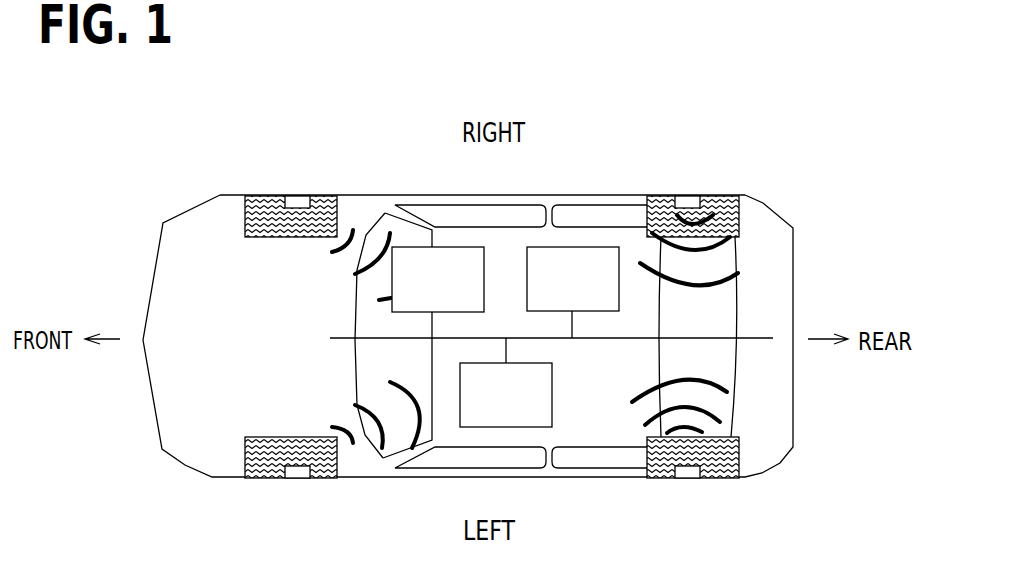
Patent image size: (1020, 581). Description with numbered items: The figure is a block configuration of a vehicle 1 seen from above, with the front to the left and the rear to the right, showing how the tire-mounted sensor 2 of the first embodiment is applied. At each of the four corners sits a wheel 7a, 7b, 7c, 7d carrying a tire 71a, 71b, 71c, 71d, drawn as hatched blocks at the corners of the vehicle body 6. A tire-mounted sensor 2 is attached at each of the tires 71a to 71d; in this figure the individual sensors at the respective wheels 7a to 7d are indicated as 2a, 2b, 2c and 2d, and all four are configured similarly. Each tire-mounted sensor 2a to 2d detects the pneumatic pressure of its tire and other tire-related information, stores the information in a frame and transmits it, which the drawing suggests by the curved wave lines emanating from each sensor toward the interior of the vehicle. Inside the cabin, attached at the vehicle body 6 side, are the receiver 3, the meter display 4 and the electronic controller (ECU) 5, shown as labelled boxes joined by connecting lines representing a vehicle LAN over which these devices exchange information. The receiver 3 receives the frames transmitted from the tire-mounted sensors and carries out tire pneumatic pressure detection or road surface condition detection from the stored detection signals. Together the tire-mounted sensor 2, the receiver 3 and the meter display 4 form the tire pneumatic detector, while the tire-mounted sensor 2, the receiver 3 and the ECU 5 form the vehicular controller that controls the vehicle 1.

The vehicle 1 is at (788, 188).
The tire-mounted sensor 2 is at (332, 208).
The tire-mounted sensor 2a is at (297, 195).
The tire-mounted sensor 2b is at (296, 480).
The tire-mounted sensor 2c is at (690, 196).
The tire-mounted sensor 2d is at (680, 479).
The receiver 3 is at (552, 397).
The meter display 4 is at (484, 268).
The electronic controller (ECU) 5 is at (619, 277).
The vehicle body 6 is at (410, 195).
The wheel 7a is at (261, 186).
The wheel 7b is at (254, 488).
The wheel 7c is at (729, 186).
The wheel 7d is at (731, 489).
The tire 71a is at (245, 174).
The tire 71b is at (244, 490).
The tire 71c is at (731, 170).
The tire 71d is at (744, 491).